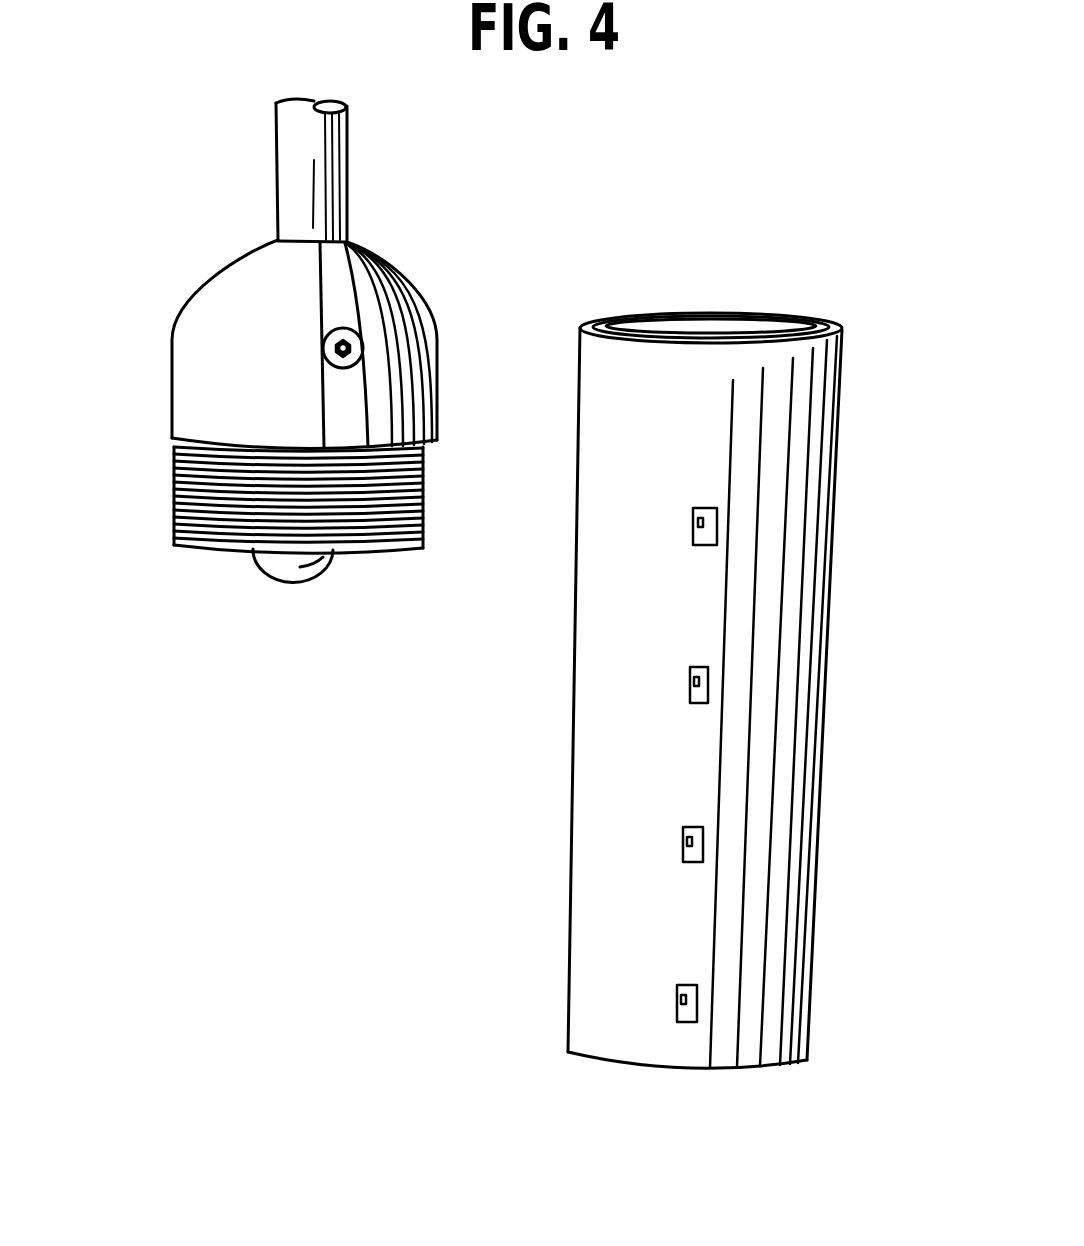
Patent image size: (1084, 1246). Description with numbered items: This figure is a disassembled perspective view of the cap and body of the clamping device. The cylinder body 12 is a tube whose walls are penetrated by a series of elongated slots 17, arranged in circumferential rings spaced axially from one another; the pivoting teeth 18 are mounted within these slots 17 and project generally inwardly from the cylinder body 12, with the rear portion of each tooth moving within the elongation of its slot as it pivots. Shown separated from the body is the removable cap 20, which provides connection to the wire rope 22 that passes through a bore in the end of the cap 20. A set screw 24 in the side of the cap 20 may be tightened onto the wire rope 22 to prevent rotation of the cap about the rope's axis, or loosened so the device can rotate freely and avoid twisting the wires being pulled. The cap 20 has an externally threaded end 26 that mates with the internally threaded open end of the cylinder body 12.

The cylinder body 12 is at (843, 360).
The slots 17 is at (705, 546).
The pivoting teeth 18 is at (693, 528).
The removable cap 20 is at (227, 290).
The wire rope 22 is at (322, 158).
The set screws 24 is at (352, 328).
The externally threaded end 26 is at (173, 514).